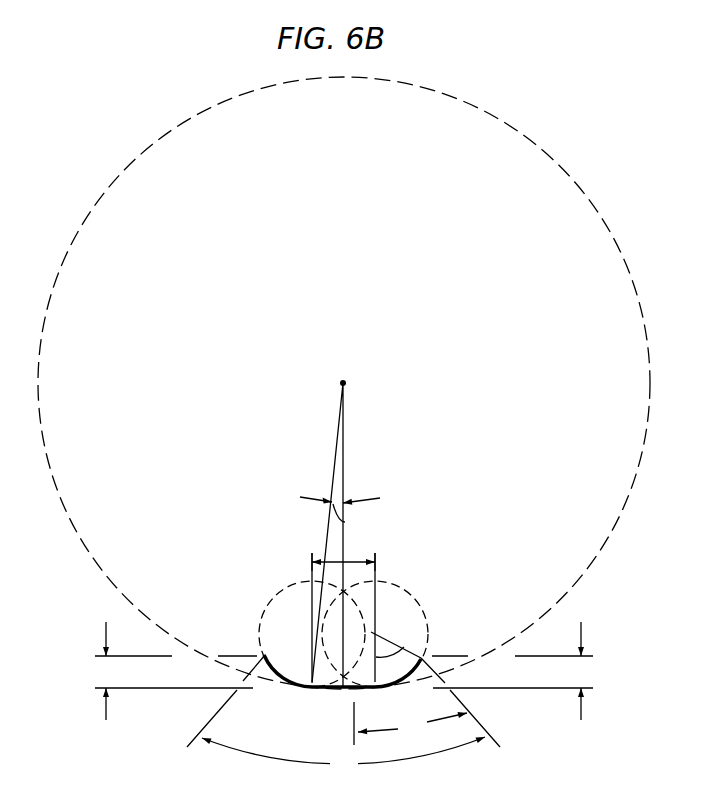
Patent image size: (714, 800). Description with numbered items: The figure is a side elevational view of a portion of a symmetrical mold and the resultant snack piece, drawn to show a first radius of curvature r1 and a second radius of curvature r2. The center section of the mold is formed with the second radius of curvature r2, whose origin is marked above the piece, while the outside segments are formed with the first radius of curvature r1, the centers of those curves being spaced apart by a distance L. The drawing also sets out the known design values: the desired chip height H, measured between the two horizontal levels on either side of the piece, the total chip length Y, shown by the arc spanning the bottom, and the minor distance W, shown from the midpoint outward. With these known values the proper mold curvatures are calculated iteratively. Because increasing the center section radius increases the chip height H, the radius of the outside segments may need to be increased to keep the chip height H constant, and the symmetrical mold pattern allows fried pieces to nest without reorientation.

The first radius of curvature r1 is at (379, 650).
The second radius of curvature r2 is at (372, 448).
The distance between edge radius centers L is at (312, 562).
The chip height H is at (343, 671).
The minor distance W is at (410, 723).
The total chip length Y is at (343, 714).